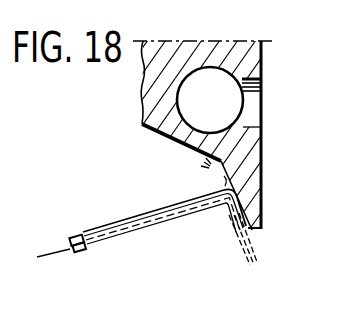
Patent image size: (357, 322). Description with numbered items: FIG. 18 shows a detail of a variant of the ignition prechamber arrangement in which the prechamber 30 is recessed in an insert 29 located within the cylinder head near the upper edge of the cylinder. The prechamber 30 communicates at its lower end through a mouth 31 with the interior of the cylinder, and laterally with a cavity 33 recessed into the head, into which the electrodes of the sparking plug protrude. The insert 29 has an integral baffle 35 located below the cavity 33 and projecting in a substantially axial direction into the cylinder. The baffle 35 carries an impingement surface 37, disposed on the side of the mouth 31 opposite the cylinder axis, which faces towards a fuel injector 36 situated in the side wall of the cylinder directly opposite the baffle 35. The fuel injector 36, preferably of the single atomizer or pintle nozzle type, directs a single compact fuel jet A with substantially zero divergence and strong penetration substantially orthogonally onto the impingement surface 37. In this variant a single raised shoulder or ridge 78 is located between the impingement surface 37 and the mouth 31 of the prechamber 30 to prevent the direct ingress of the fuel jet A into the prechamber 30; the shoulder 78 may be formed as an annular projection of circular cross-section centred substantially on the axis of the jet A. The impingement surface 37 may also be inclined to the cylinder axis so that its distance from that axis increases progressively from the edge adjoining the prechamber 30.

The insert 29 is at (232, 57).
The ignition prechamber 30 is at (193, 100).
The mouth 31 is at (180, 143).
The cavity 33 is at (250, 99).
The baffle 35 is at (264, 205).
The fuel injector 36 is at (80, 253).
The impingement surface 37 is at (233, 218).
The shoulder 78 is at (216, 174).
The fuel jet A is at (141, 227).